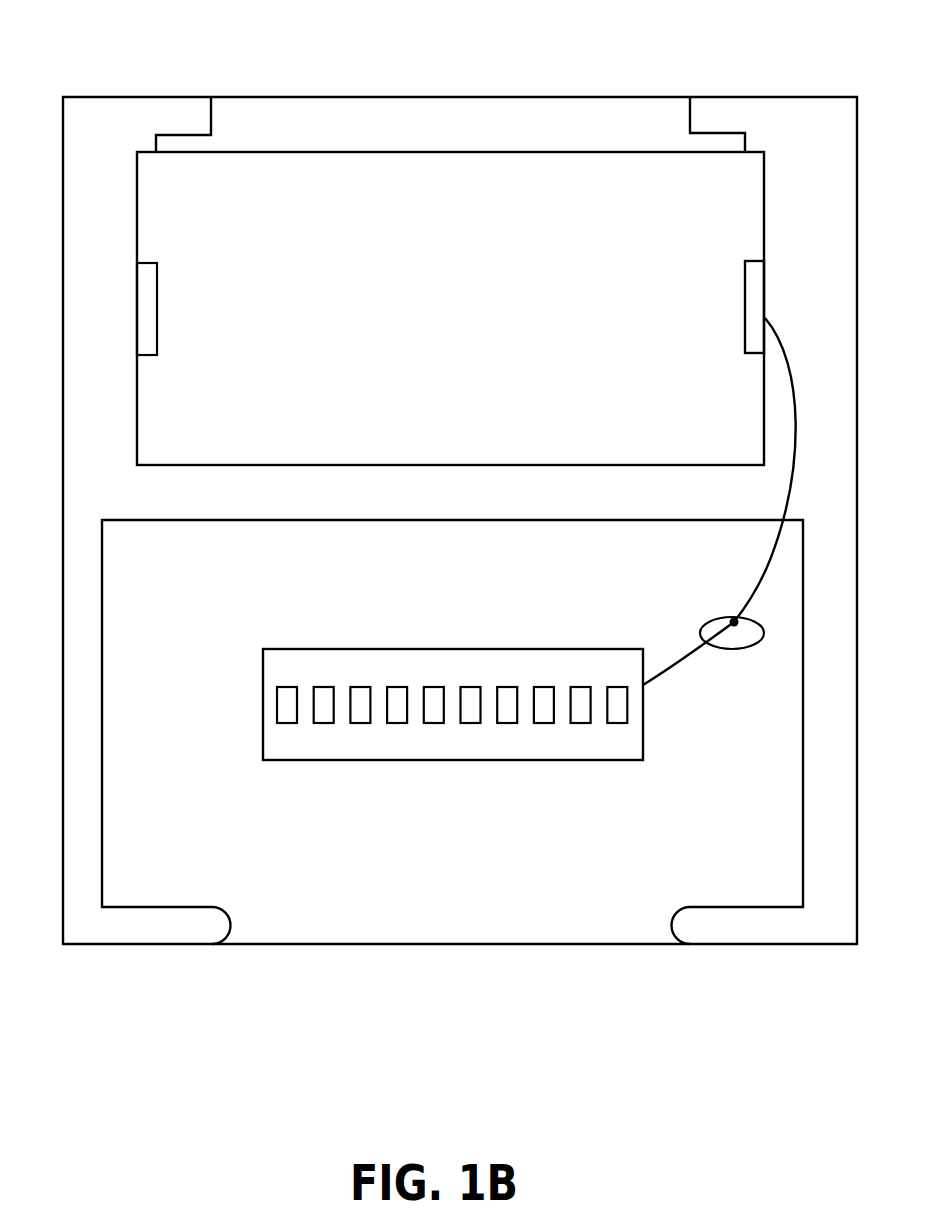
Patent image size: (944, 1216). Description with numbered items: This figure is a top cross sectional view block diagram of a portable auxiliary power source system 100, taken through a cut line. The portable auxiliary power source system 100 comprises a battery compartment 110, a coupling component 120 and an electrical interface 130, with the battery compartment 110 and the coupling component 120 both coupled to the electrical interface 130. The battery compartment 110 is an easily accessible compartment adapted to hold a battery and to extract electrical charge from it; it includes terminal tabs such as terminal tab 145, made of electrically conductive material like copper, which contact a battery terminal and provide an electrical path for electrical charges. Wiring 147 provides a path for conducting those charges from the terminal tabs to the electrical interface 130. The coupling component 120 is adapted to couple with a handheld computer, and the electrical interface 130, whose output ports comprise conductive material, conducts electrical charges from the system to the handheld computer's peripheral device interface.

The portable auxiliary power source system 100 is at (457, 34).
The battery compartment 110 is at (430, 318).
The coupling component 120 is at (431, 871).
The electrical interface 130 is at (429, 678).
The terminal tab 145 is at (772, 288).
The wiring 147 is at (752, 650).